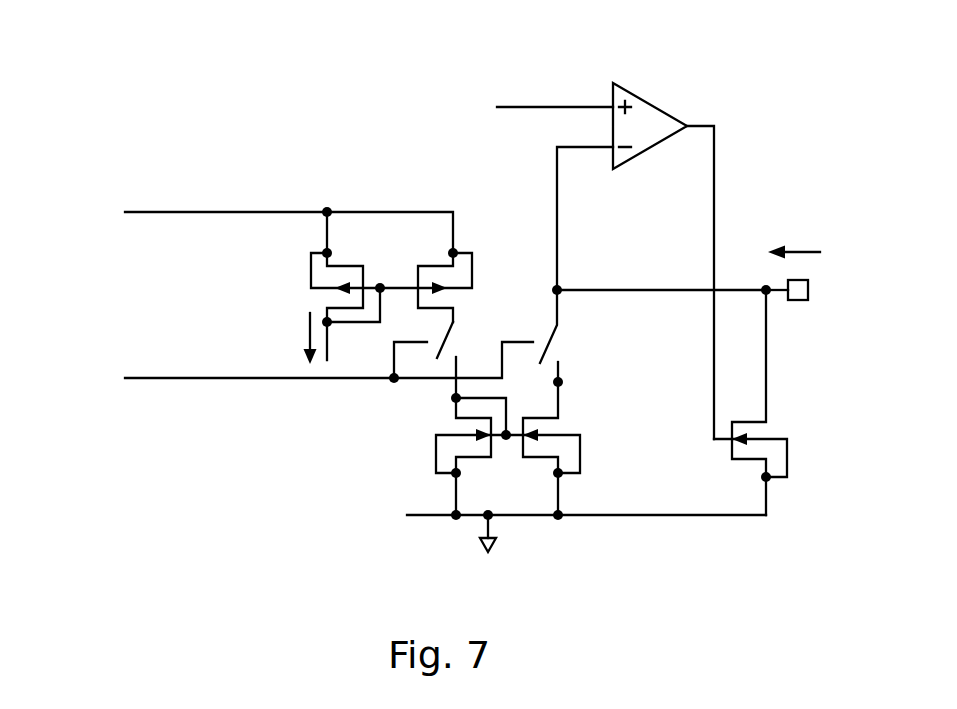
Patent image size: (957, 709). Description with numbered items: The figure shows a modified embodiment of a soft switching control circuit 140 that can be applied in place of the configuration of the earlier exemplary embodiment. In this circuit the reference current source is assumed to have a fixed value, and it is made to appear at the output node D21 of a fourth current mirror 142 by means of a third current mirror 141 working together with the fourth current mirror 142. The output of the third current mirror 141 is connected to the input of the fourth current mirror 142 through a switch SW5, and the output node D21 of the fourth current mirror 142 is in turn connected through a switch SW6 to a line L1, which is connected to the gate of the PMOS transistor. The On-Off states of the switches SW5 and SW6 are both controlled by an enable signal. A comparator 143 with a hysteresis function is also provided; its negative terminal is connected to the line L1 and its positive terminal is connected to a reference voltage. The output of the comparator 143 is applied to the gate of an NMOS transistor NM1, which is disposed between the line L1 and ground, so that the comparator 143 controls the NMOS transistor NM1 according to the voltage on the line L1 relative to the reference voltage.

The soft switching control circuit 140 is at (300, 88).
The third current mirror 141 is at (280, 259).
The fourth current mirror 142 is at (428, 453).
The comparator 143 is at (647, 103).
The switch SW5 is at (462, 342).
The switch SW6 is at (567, 342).
The output node D21 is at (560, 384).
The line L1 is at (635, 288).
The NMOS transistor NM1 is at (770, 402).